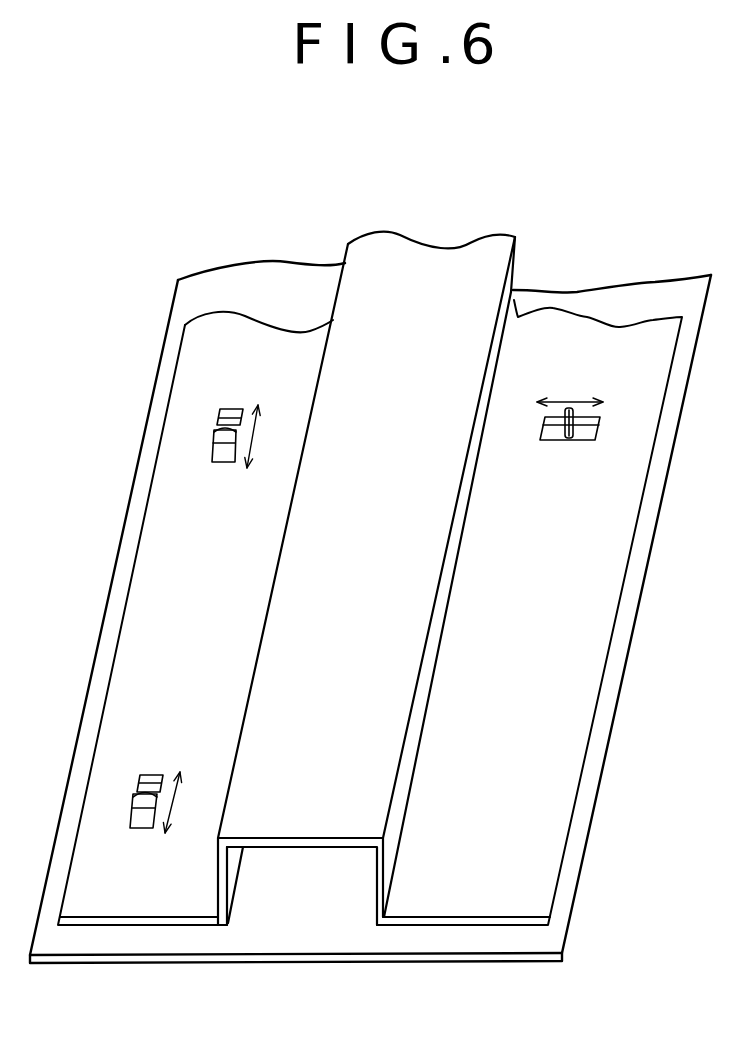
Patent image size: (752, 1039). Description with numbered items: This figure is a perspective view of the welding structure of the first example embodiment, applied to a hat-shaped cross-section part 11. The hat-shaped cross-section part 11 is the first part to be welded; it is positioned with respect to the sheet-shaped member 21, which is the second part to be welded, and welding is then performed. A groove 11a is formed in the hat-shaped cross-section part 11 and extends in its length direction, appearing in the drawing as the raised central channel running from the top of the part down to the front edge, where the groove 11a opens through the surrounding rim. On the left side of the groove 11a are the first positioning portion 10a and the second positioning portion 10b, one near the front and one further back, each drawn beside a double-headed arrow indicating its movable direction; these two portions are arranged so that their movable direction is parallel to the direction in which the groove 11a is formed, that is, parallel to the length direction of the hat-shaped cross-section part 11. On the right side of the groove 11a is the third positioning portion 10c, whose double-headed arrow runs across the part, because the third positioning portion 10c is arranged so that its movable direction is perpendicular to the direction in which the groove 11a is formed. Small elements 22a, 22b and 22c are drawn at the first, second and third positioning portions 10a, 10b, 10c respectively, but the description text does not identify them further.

The sheet-shaped member 21 is at (540, 938).
The hat-shaped cross-section part 11 is at (565, 732).
The groove 11a is at (283, 878).
The first positioning portion 10a is at (161, 765).
The second positioning portion 10b is at (244, 400).
The third positioning portion 10c is at (588, 388).
The first clip 22a is at (132, 815).
The second clip 22b is at (224, 436).
The third clip 22c is at (577, 430).